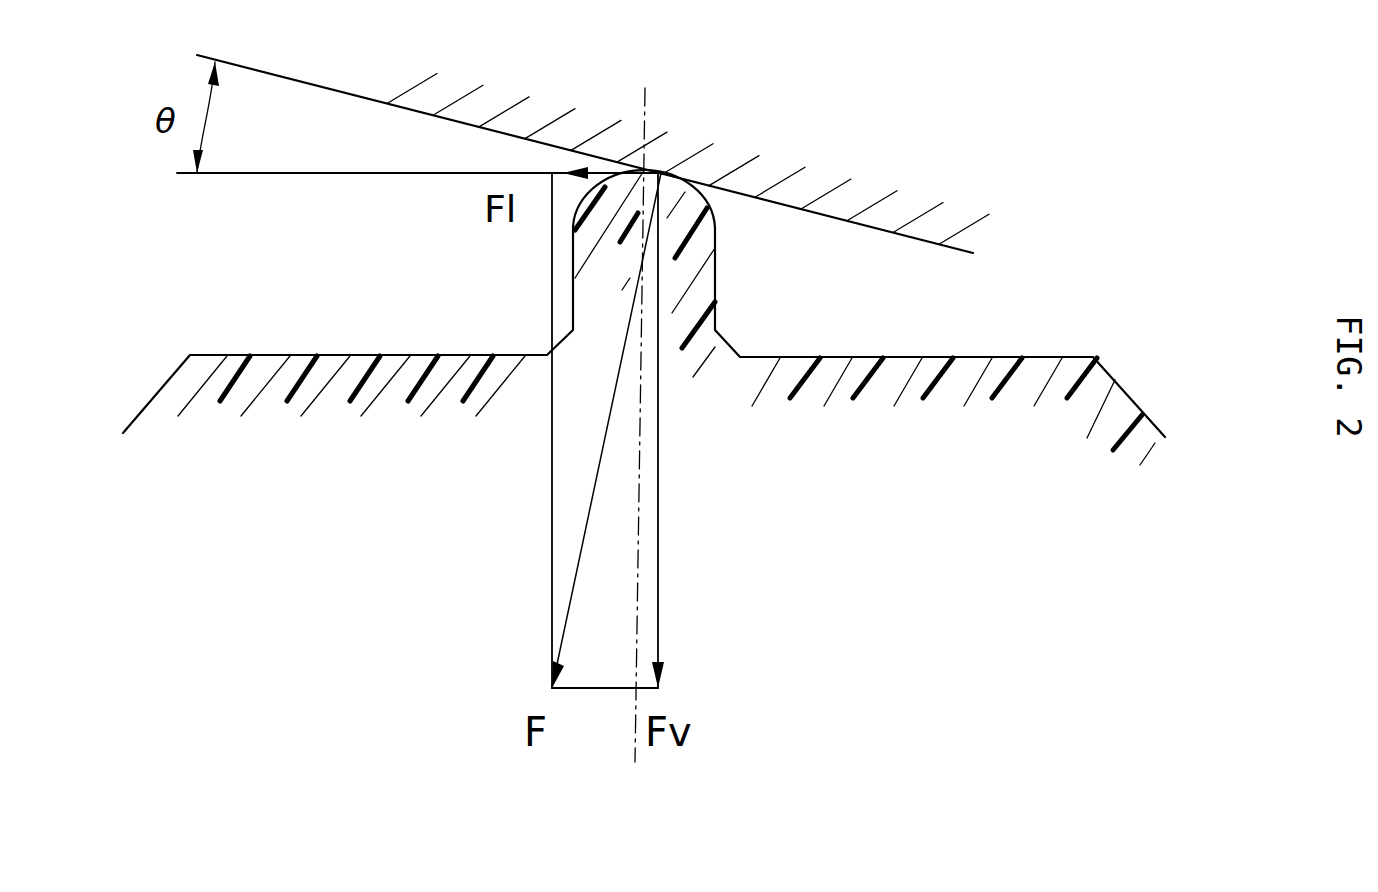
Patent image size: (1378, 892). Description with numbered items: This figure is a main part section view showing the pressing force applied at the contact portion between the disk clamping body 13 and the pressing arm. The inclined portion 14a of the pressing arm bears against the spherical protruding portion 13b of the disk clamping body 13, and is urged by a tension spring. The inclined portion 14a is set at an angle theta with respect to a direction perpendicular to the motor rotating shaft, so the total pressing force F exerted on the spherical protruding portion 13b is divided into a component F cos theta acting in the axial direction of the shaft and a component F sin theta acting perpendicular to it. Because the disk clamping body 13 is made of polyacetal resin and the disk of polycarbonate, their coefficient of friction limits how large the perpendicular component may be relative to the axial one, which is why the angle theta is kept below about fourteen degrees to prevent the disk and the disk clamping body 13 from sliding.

The disk clamping body 13 is at (1117, 380).
The spherical protruding portion 13b is at (717, 207).
The inclined portion 14a is at (915, 238).